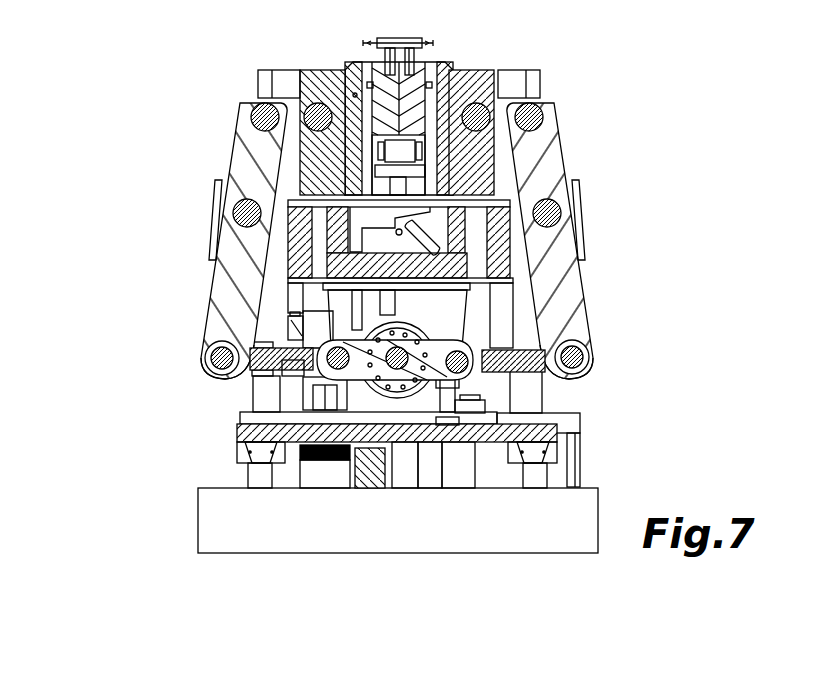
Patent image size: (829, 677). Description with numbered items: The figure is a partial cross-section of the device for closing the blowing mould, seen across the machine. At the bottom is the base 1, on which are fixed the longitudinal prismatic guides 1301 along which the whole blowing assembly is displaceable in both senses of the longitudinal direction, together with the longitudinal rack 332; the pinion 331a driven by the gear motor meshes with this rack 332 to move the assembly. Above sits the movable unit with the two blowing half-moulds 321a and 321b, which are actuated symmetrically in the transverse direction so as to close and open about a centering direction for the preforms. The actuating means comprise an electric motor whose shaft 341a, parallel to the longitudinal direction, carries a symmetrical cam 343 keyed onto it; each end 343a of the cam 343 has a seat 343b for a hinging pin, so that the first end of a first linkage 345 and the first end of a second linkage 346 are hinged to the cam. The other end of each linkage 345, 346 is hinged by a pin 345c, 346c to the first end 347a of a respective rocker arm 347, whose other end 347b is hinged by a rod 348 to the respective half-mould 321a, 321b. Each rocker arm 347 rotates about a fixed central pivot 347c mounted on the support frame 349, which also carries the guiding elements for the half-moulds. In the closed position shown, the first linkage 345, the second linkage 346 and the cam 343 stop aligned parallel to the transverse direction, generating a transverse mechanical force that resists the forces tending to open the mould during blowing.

The base 1 is at (498, 538).
The half-mould 321a is at (368, 64).
The half-mould 321b is at (441, 68).
The pinion 331a is at (303, 455).
The longitudinal rack 332 is at (383, 462).
The shaft 341a is at (405, 447).
The cam 343 is at (362, 455).
The end of the cam 343a is at (330, 372).
The seat 343b is at (292, 368).
The first linkage 345 is at (258, 350).
The pin 345c is at (218, 355).
The second linkage 346 is at (525, 355).
The pin 346c is at (582, 360).
The rocker arm 347 is at (225, 273).
The first end of the rocker arm 347a is at (205, 376).
The other end of the rocker arm 347b is at (252, 106).
The fixed central pivot 347c is at (243, 212).
The rod 348 is at (290, 106).
The support frame 349 is at (213, 194).
The prismatic guides 1301 is at (245, 458).